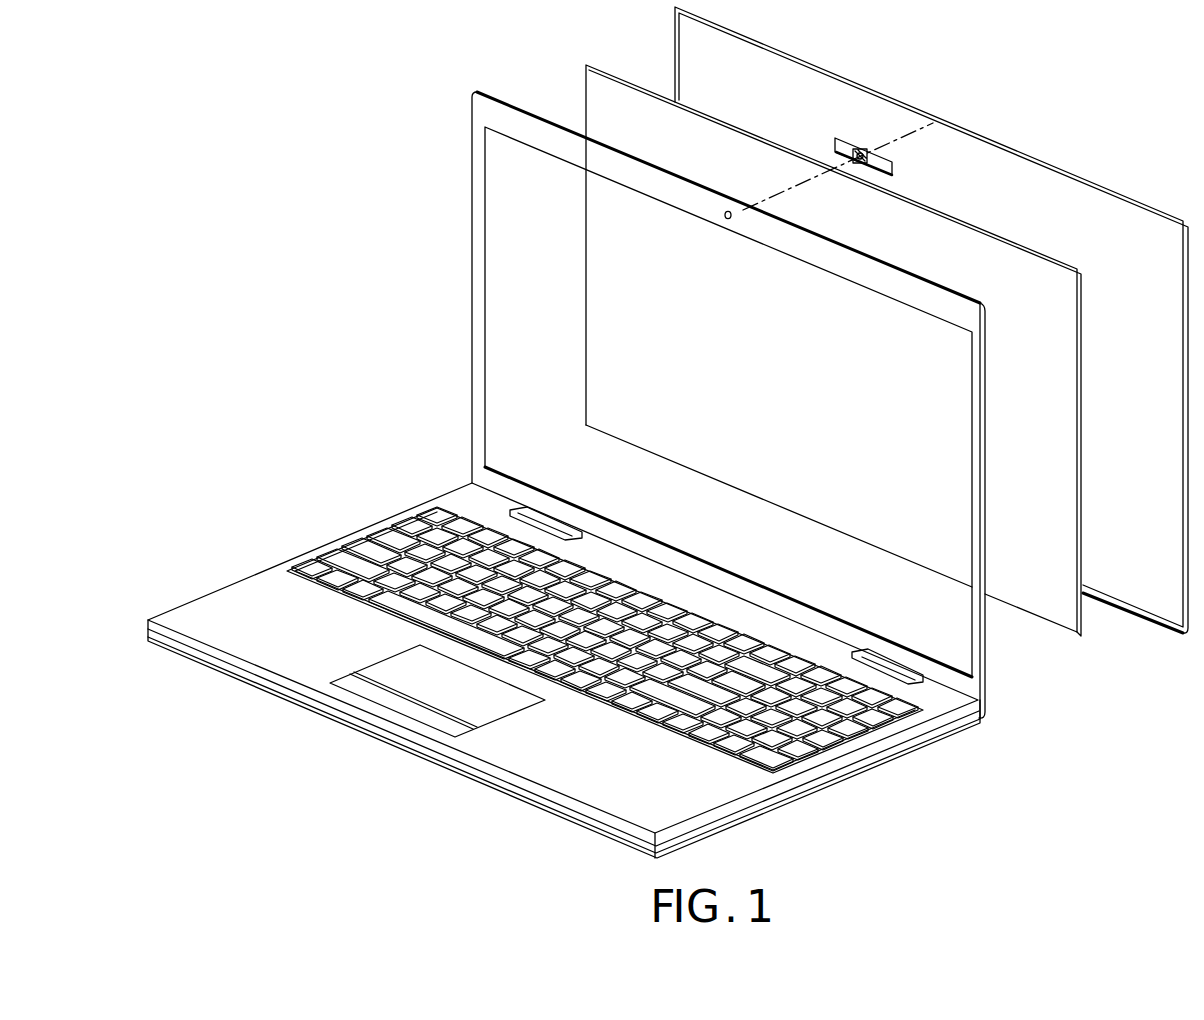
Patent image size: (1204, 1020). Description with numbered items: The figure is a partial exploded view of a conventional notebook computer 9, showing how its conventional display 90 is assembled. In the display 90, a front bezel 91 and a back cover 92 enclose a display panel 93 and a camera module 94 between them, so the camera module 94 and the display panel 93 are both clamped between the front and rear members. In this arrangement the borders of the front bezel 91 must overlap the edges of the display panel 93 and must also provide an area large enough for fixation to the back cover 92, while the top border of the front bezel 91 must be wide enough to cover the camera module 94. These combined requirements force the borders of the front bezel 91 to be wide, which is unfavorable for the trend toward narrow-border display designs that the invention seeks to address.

The notebook computer 9 is at (220, 96).
The display 90 is at (434, 165).
The front bezel 91 is at (476, 258).
The back cover 92 is at (1012, 147).
The display panel 93 is at (603, 96).
The camera module 94 is at (844, 138).